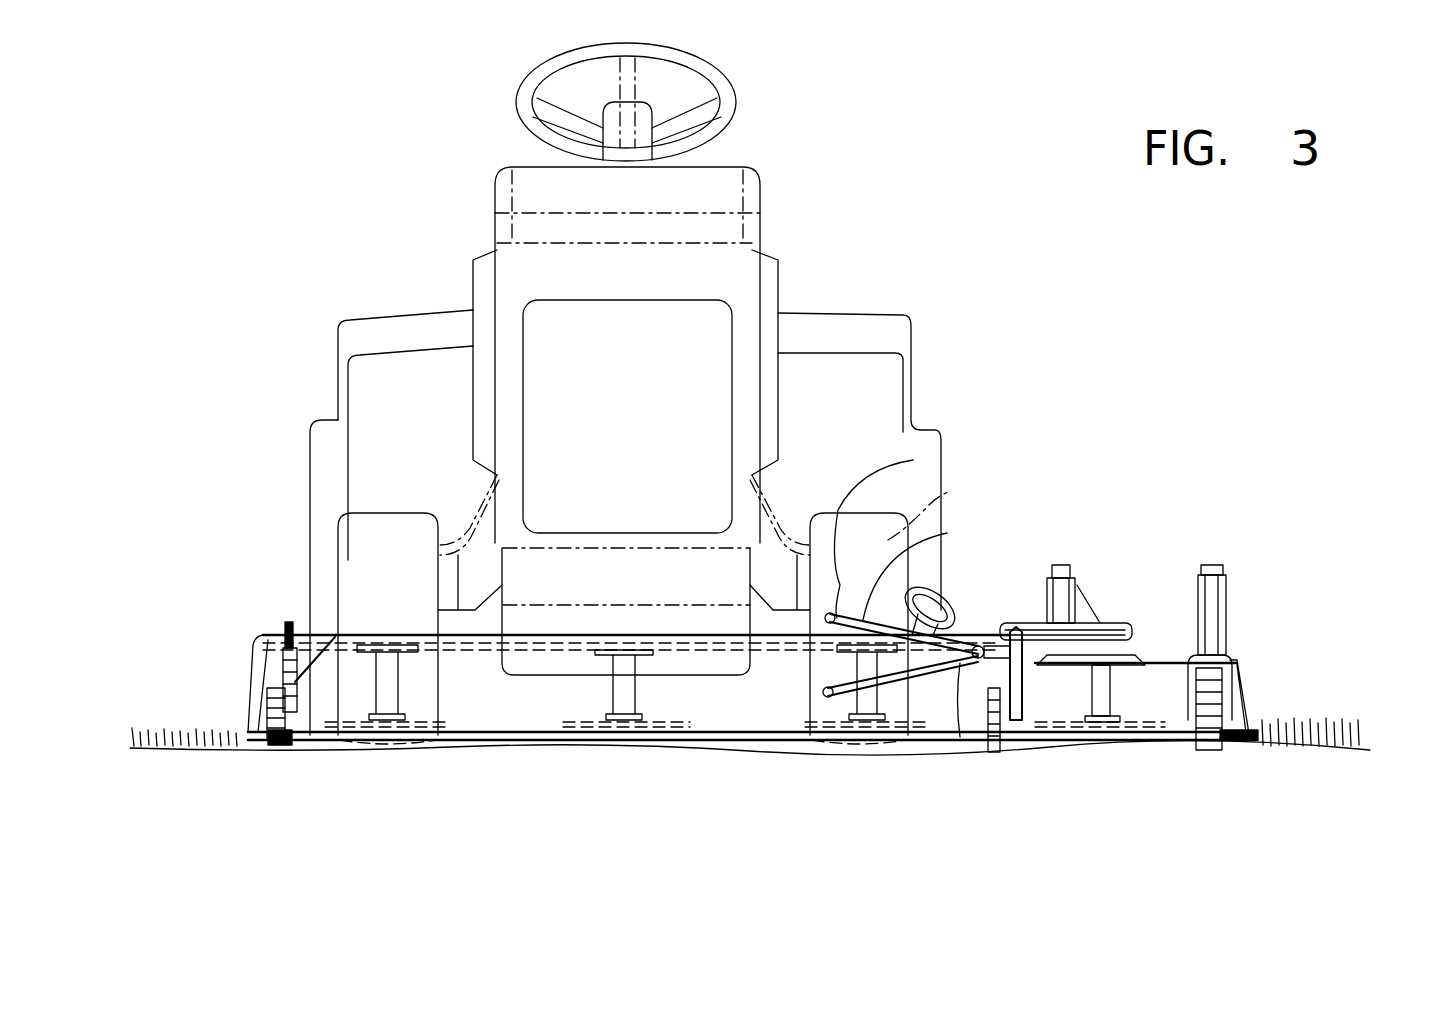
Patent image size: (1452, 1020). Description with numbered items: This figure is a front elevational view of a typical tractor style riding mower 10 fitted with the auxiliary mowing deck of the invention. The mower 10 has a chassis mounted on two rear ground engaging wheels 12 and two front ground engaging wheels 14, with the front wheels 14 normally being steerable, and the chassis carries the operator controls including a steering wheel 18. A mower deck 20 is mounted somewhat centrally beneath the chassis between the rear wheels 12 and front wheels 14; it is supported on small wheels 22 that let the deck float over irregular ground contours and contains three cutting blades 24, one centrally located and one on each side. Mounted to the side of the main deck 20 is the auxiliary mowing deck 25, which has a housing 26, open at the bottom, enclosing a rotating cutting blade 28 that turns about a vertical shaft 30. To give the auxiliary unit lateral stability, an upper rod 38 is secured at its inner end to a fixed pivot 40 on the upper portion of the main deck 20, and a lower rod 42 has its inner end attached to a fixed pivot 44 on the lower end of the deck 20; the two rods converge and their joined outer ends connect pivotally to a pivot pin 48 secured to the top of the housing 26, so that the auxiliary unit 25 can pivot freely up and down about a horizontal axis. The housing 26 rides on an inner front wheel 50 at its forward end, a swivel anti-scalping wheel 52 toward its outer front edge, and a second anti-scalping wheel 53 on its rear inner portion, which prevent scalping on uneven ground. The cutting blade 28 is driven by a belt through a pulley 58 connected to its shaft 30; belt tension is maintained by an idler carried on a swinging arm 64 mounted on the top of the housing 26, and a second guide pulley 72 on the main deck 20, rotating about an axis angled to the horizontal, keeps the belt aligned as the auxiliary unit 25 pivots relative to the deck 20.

The riding mower 10 is at (731, 359).
The rear ground engaging wheels 12 is at (310, 460).
The front ground engaging wheels 14 is at (350, 563).
The steering wheel 18 is at (722, 92).
The mower deck 20 is at (525, 708).
The small wheels 22 is at (277, 748).
The cutting blades 24 is at (423, 740).
The auxiliary mowing deck 25 is at (1209, 662).
The housing 26 is at (1140, 660).
The rotating cutting blade 28 is at (1150, 740).
The shaft 30 is at (1080, 745).
The upper rod 38 is at (947, 533).
The fixed pivot 40 is at (913, 460).
The lower rod 42 is at (915, 740).
The fixed pivot 44 is at (828, 745).
The pivot pin 48 is at (988, 745).
The inner front wheel 50 is at (1000, 758).
The anti-scalping wheel 52 is at (1230, 590).
The second anti-scalping wheel 53 is at (1063, 575).
The pulley 58 is at (1118, 623).
The arm 64 is at (1017, 627).
The second guide pulley 72 is at (945, 596).